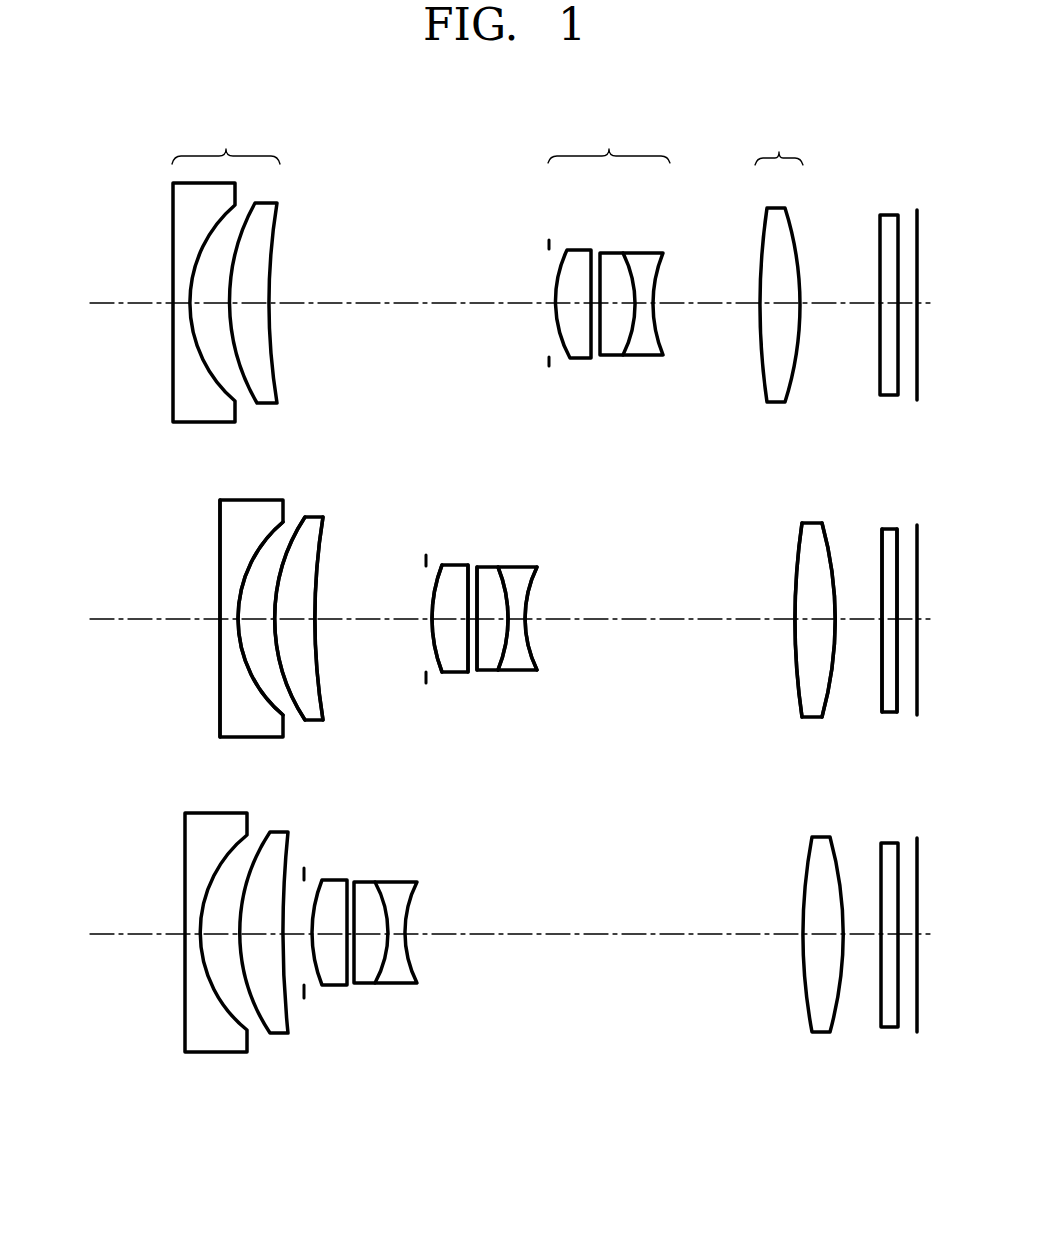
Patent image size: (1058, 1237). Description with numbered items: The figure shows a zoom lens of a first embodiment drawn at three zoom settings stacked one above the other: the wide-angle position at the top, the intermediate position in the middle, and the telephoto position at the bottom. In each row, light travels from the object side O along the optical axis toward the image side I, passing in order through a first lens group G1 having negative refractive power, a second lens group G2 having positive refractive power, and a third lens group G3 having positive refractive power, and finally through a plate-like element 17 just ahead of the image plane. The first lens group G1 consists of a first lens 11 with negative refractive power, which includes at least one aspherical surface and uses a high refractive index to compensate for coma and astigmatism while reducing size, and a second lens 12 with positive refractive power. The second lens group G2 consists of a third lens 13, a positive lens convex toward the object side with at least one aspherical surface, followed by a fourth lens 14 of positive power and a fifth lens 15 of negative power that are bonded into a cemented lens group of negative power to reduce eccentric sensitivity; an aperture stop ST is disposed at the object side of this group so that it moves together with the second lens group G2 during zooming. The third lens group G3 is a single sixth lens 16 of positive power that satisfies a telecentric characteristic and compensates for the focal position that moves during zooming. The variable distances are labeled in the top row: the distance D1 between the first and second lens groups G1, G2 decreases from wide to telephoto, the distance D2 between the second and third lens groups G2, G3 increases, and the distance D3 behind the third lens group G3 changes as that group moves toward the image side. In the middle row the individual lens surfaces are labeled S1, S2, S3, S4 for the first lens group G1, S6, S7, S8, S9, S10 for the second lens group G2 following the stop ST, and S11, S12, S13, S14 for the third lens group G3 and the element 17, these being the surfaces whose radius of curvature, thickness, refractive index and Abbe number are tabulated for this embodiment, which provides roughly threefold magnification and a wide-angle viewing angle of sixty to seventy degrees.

The first lens 11 is at (205, 422).
The second lens 12 is at (262, 404).
The third lens 13 is at (572, 358).
The fourth lens 14 is at (613, 358).
The fifth lens 15 is at (652, 358).
The sixth lens 16 is at (776, 402).
The optical filter plate 17 is at (887, 395).
The aperture stop ST is at (549, 240).
The first lens group G1 is at (226, 141).
The second lens group G2 is at (609, 140).
The third lens group G3 is at (779, 141).
The variable distance D1 is at (419, 287).
The variable distance D2 is at (711, 287).
The variable distance D3 is at (840, 288).
The object side / optical axis O is at (490, 618).
The image plane I is at (933, 621).
The lens surface S1 is at (217, 695).
The lens surface S2 is at (262, 690).
The lens surface S3 is at (290, 700).
The lens surface S4 is at (323, 690).
The lens surface S6 is at (433, 652).
The lens surface S7 is at (460, 655).
The lens surface S8 is at (480, 655).
The lens surface S9 is at (510, 655).
The lens surface S10 is at (540, 650).
The lens surface S11 is at (800, 702).
The lens surface S12 is at (828, 695).
The lens surface S13 is at (878, 690).
The lens surface S14 is at (900, 700).